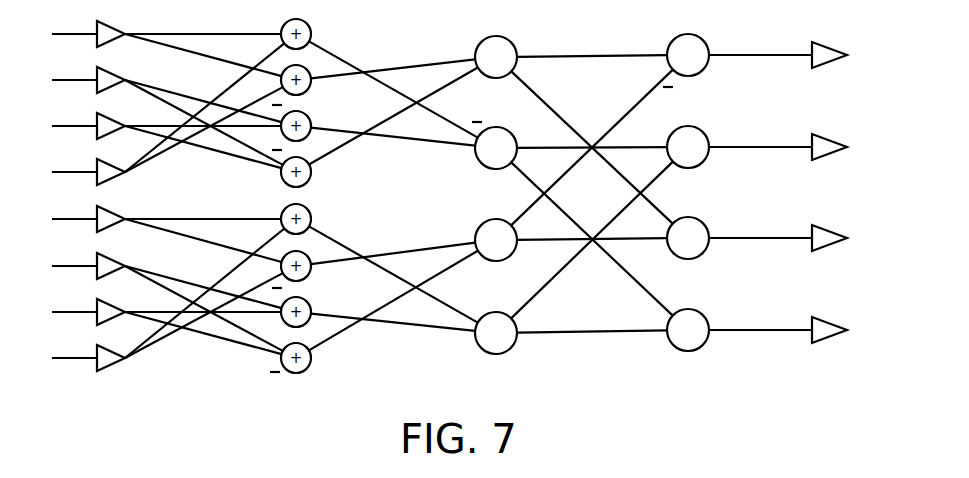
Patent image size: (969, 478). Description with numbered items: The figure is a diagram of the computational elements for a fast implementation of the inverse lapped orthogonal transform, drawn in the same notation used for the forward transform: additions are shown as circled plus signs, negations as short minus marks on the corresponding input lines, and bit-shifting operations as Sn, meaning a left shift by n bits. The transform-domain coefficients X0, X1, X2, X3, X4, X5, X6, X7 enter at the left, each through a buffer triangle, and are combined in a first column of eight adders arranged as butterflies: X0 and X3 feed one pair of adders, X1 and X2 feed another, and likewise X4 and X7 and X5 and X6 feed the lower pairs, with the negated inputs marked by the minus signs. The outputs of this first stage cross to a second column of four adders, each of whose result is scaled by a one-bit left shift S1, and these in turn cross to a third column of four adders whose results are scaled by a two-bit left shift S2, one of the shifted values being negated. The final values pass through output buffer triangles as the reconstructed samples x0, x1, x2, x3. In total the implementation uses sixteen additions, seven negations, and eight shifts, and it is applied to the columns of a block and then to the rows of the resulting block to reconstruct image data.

The transform coefficient X0 is at (74, 36).
The transform coefficient X1 is at (74, 82).
The transform coefficient X2 is at (74, 128).
The transform coefficient X3 is at (74, 174).
The transform coefficient X4 is at (74, 221).
The transform coefficient X5 is at (74, 268).
The transform coefficient X6 is at (74, 314).
The transform coefficient X7 is at (74, 360).
The one-bit left shift S1 is at (484, 195).
The two-bit left shift S2 is at (670, 195).
The reconstructed sample x0 is at (797, 56).
The reconstructed sample x1 is at (797, 148).
The reconstructed sample x2 is at (797, 239).
The reconstructed sample x3 is at (797, 331).